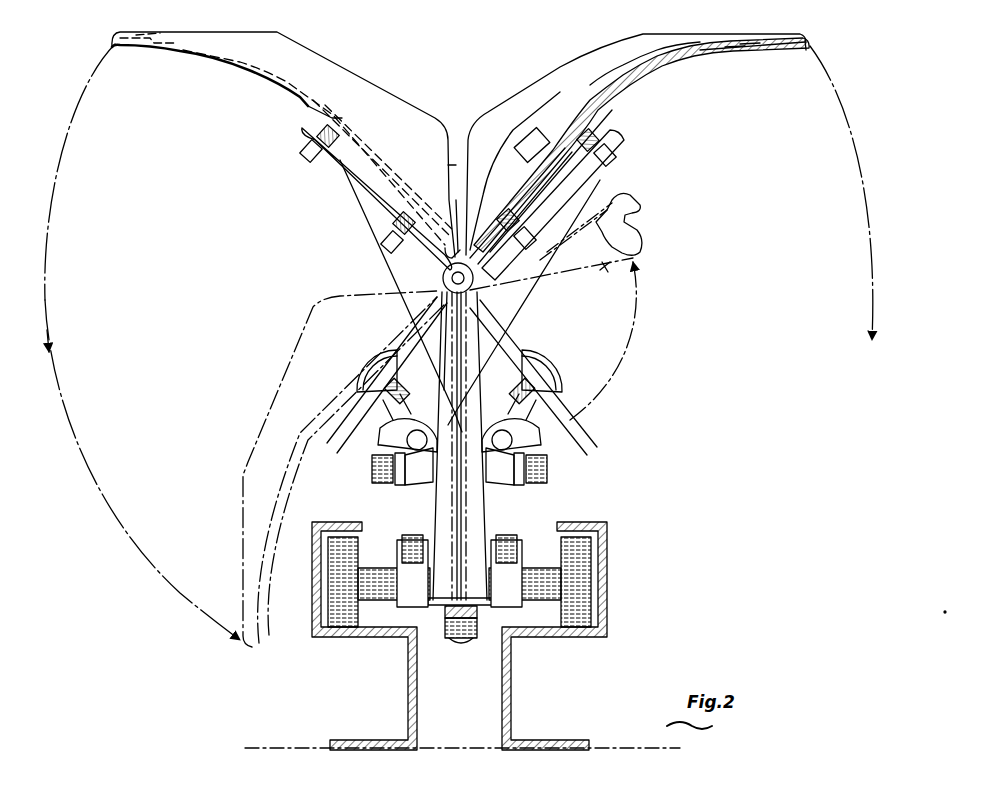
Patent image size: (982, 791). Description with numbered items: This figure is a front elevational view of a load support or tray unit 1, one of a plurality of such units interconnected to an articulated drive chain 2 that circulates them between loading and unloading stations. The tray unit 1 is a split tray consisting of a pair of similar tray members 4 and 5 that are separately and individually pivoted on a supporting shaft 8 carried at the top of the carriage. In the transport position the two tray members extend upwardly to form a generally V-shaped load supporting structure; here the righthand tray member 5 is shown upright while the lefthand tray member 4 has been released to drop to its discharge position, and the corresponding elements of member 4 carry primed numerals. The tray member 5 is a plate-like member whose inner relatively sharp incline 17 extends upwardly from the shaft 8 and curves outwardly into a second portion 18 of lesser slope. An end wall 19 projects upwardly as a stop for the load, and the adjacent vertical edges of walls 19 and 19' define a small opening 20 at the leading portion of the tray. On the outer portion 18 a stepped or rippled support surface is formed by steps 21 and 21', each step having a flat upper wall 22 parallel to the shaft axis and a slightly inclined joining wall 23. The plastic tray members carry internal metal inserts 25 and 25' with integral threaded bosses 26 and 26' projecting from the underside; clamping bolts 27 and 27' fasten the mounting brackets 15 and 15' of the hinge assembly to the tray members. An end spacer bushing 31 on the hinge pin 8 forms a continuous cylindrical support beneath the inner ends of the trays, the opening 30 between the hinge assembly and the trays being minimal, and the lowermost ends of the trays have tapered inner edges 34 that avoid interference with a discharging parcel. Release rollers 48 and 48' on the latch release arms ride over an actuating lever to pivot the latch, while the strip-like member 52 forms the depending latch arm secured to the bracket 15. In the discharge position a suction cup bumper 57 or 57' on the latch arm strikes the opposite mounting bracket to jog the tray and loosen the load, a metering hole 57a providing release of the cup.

The tray unit 1 is at (655, 323).
The drive chain 2 is at (471, 641).
The tray member 4 is at (212, 66).
The tray member 5 is at (757, 60).
The supporting shaft 8 is at (443, 278).
The mounting bracket 15 is at (551, 277).
The mounting bracket 15' is at (382, 280).
The inclined portion 17 is at (525, 170).
The second portion 18 is at (705, 45).
The end wall 19 is at (636, 144).
The end wall 19' is at (285, 144).
The opening 20 is at (450, 188).
The steps 21 is at (752, 30).
The steps 21' is at (147, 27).
The upper wall 22 is at (735, 52).
The joining wall 23 is at (745, 40).
The insert 25 is at (551, 173).
The insert 25' is at (319, 147).
The threaded bosses 26 is at (613, 129).
The threaded bosses 26' is at (296, 136).
The clamping bolts 27 is at (501, 211).
The clamping bolts 27' is at (291, 162).
The opening 30 is at (456, 238).
The end spacer bushing 31 is at (470, 286).
The inner edges 34 is at (487, 168).
The release roller 48 is at (535, 465).
The release roller 48' is at (387, 465).
The strip-like member 52 is at (606, 272).
The suction cup bumper 57 is at (541, 379).
The suction cup bumper 57' is at (368, 379).
The metering hole 57a is at (556, 144).